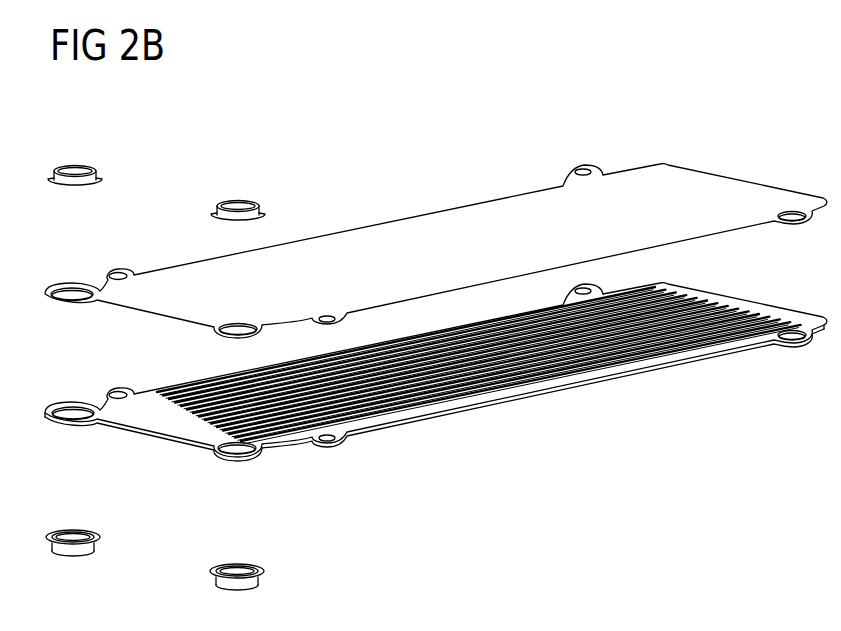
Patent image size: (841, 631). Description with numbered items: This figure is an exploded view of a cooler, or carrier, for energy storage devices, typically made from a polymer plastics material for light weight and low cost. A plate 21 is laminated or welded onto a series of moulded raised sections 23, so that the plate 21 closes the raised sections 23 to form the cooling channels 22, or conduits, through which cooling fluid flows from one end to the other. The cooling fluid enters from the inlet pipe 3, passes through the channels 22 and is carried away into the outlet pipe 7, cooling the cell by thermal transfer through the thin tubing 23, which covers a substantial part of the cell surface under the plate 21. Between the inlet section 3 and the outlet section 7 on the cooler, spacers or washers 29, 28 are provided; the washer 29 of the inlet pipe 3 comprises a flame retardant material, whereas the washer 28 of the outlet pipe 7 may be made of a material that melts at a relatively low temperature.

The inlet pipe 3 is at (73, 410).
The outlet pipe 7 is at (240, 452).
The plate 21 is at (430, 230).
The channels 22 is at (436, 373).
The raised sections 23 is at (472, 338).
The washer 28 is at (237, 203).
The washer 29 is at (73, 168).